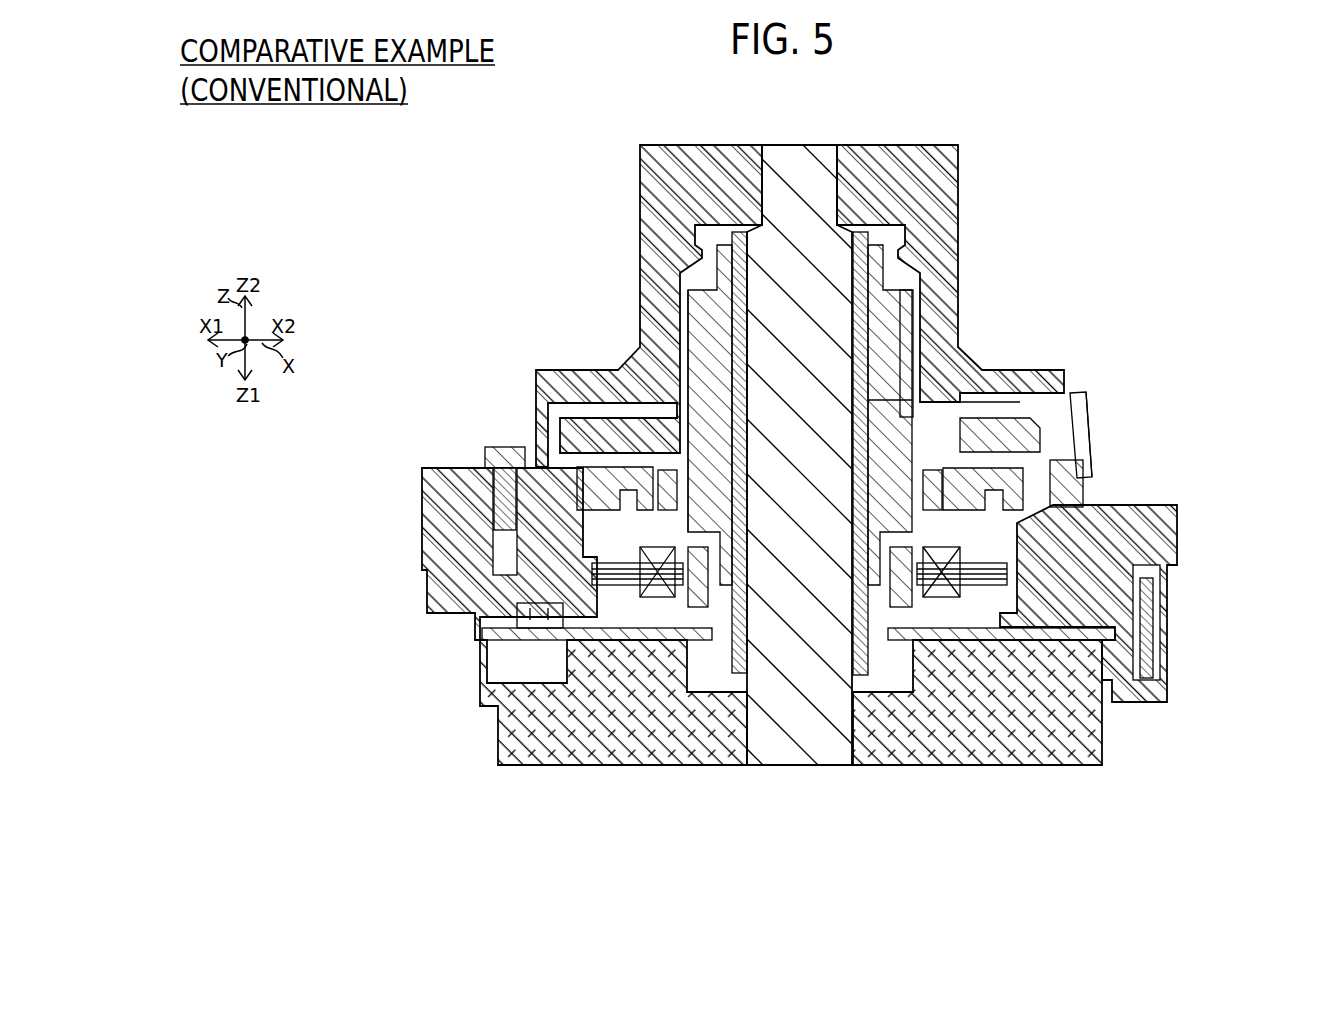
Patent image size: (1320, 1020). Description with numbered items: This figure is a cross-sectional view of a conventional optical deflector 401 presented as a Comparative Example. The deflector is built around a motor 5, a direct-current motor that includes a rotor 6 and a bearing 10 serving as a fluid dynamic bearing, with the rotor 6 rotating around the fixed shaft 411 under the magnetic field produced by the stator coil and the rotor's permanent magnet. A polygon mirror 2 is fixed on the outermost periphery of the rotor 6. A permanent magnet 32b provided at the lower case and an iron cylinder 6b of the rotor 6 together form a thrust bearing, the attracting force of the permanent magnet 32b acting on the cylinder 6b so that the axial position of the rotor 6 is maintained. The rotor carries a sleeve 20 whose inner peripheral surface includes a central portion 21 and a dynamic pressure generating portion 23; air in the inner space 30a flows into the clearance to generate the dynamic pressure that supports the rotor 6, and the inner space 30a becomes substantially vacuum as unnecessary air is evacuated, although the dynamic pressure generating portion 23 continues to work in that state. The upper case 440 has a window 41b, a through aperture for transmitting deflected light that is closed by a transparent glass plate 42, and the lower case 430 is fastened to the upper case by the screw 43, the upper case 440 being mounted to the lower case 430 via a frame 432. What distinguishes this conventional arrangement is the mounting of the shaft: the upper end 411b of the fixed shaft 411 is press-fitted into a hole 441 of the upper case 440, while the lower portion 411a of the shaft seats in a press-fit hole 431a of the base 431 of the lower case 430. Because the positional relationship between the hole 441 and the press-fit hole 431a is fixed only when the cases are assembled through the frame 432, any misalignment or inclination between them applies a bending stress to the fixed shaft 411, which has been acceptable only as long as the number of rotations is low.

The optical deflector 401 is at (333, 163).
The motor 5 is at (343, 200).
The bearing 10 is at (383, 243).
The upper case 440 is at (547, 273).
The hole 441 is at (760, 173).
The upper end 411b is at (792, 180).
The sleeve 20 is at (880, 270).
The dynamic pressure generating portion 23 is at (870, 308).
The central portion 21 is at (880, 396).
The rotor 6 is at (872, 397).
The iron cylinder 6b is at (972, 423).
The permanent magnet 32b is at (930, 475).
The polygon mirror 2 is at (1087, 424).
The window 41b is at (1065, 440).
The transparent glass plate 42 is at (1088, 470).
The screw 43 is at (487, 447).
The frame 432 is at (435, 625).
The inner space 30a is at (658, 620).
The lower case 430 is at (448, 735).
The base 431 is at (575, 780).
The press-fit hole 431a is at (740, 763).
The lower end of shaft 411a is at (777, 733).
The fixed shaft 411 is at (817, 723).